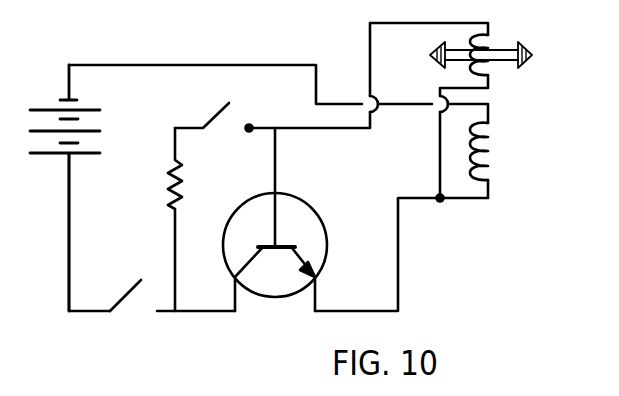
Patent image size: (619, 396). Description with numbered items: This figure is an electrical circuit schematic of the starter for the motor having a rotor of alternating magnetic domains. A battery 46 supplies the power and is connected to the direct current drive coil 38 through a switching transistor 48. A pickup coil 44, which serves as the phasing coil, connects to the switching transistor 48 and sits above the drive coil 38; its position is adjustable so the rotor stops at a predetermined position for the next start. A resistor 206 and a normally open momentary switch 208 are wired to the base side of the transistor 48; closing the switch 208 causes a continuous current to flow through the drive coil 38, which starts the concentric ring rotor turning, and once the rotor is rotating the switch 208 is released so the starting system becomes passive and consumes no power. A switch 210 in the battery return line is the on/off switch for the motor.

The direct current drive coil 38 is at (492, 168).
The pickup coil 44 is at (492, 42).
The battery 46 is at (60, 154).
The switching transistor 48 is at (325, 230).
The resistor 206 is at (174, 187).
The switch 208 is at (213, 117).
The switch 210 is at (110, 312).